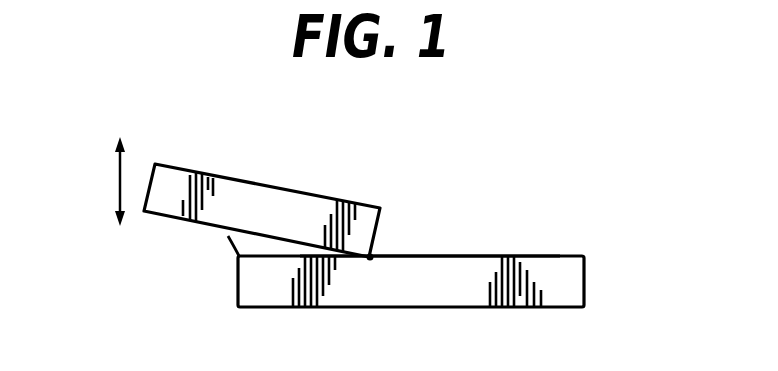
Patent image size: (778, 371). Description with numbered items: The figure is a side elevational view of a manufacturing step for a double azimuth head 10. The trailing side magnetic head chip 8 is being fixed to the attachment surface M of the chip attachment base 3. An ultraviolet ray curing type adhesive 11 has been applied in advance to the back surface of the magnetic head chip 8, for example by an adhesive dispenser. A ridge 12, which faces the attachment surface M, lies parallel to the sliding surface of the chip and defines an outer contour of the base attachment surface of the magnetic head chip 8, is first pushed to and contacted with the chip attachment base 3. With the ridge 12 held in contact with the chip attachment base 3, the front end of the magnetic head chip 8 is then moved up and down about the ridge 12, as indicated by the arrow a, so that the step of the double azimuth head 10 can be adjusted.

The double azimuth head 10 is at (630, 186).
The magnetic head chip 8 is at (258, 198).
The chip attachment base 3 is at (540, 272).
The attachment surface M is at (470, 256).
The ridge 12 is at (374, 256).
The ultraviolet ray curing type adhesive 11 is at (247, 252).
The arrow a is at (120, 188).